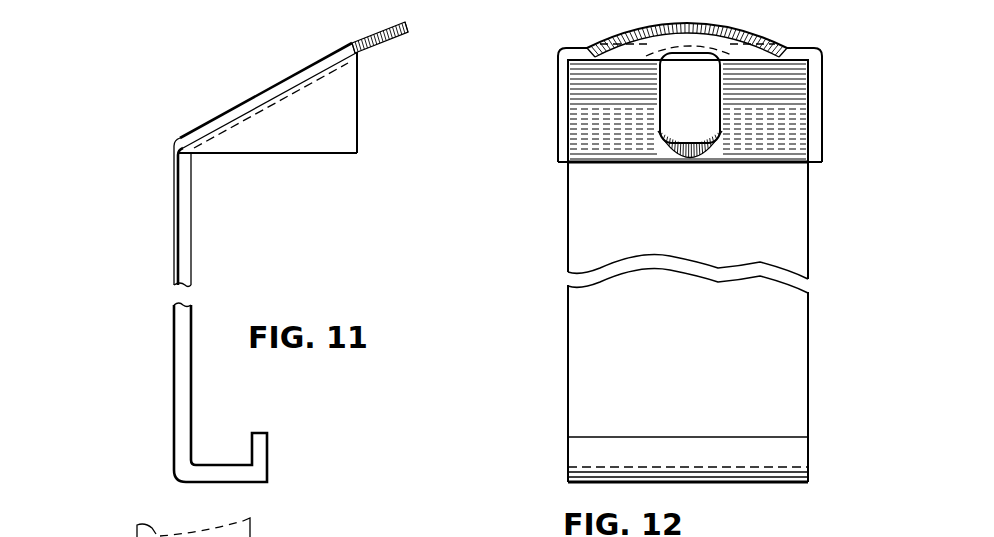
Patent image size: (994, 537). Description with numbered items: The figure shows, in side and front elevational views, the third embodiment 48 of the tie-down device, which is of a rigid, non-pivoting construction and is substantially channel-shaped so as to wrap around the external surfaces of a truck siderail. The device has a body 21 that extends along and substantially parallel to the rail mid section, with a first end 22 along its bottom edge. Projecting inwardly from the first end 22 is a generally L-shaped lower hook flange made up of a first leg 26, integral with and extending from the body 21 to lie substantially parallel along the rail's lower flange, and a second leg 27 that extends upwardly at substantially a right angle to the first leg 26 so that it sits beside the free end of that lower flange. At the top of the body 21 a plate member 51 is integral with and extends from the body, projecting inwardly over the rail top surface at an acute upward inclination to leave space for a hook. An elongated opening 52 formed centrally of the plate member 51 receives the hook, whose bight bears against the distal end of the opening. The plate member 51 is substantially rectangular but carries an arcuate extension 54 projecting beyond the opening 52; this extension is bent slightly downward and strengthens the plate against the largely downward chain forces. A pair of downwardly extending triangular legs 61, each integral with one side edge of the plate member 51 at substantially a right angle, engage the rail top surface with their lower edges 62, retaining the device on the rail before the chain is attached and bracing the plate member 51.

In FIG. 11, the body 21 is at (173, 255).
In FIG. 12, the body 21 is at (778, 247).
In FIG. 11, the first end 22 is at (180, 374).
In FIG. 11, the first leg 26 is at (227, 476).
In FIG. 11, the second leg 27 is at (269, 450).
In FIG. 12, the second leg 27 is at (800, 455).
In FIG. 11, the third embodiment 48 is at (158, 114).
In FIG. 12, the third embodiment 48 is at (840, 50).
In FIG. 11, the plate member 51 is at (263, 86).
In FIG. 12, the plate member 51 is at (775, 98).
In FIG. 12, the elongated opening 52 is at (695, 100).
In FIG. 11, the arcuate extension 54 is at (394, 44).
In FIG. 12, the arcuate extension 54 is at (680, 27).
In FIG. 11, the triangular legs 61 is at (343, 118).
In FIG. 12, the triangular legs 61 is at (558, 123).
In FIG. 11, the lower edges 62 is at (275, 154).